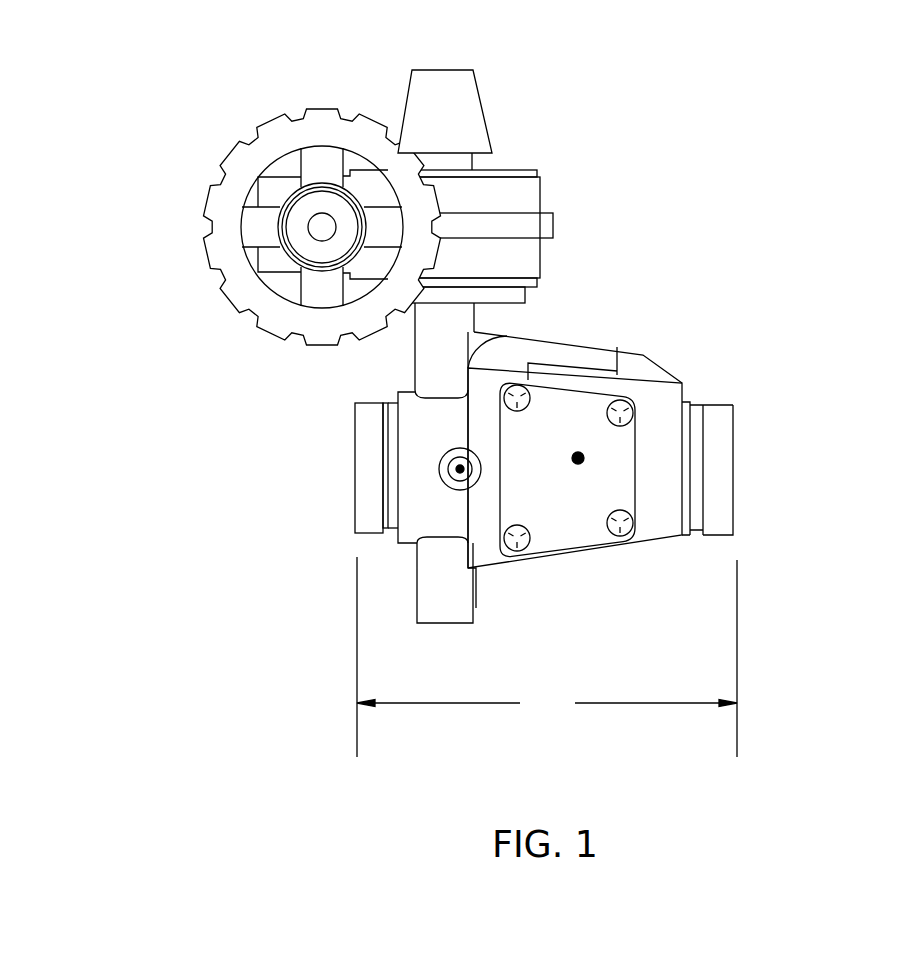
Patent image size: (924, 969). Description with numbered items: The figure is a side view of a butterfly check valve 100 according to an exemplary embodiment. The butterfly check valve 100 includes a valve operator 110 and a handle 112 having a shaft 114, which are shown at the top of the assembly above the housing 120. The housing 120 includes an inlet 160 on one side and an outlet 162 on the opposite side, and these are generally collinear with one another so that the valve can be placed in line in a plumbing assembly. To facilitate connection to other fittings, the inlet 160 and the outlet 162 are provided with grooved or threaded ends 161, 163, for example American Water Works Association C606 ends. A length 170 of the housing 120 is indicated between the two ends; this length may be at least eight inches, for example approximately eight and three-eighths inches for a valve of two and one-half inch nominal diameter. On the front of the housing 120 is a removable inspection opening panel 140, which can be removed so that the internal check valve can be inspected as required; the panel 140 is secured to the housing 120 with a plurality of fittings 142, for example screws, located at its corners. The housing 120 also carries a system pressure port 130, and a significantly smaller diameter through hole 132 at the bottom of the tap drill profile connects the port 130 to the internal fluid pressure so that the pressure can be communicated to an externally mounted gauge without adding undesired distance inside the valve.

The butterfly check valve 100 is at (491, 341).
The valve operator 110 is at (358, 207).
The handle 112 is at (264, 226).
The shaft 114 is at (282, 232).
The housing 120 is at (671, 377).
The system pressure port 130 is at (324, 463).
The through hole 132 is at (396, 472).
The removable inspection opening panel 140 is at (578, 458).
The fittings 142 is at (662, 395).
The inlet 160 is at (230, 498).
The grooved or threaded end 161 is at (319, 488).
The outlet 162 is at (781, 440).
The grooved or threaded end 163 is at (768, 495).
The length 170 is at (547, 657).